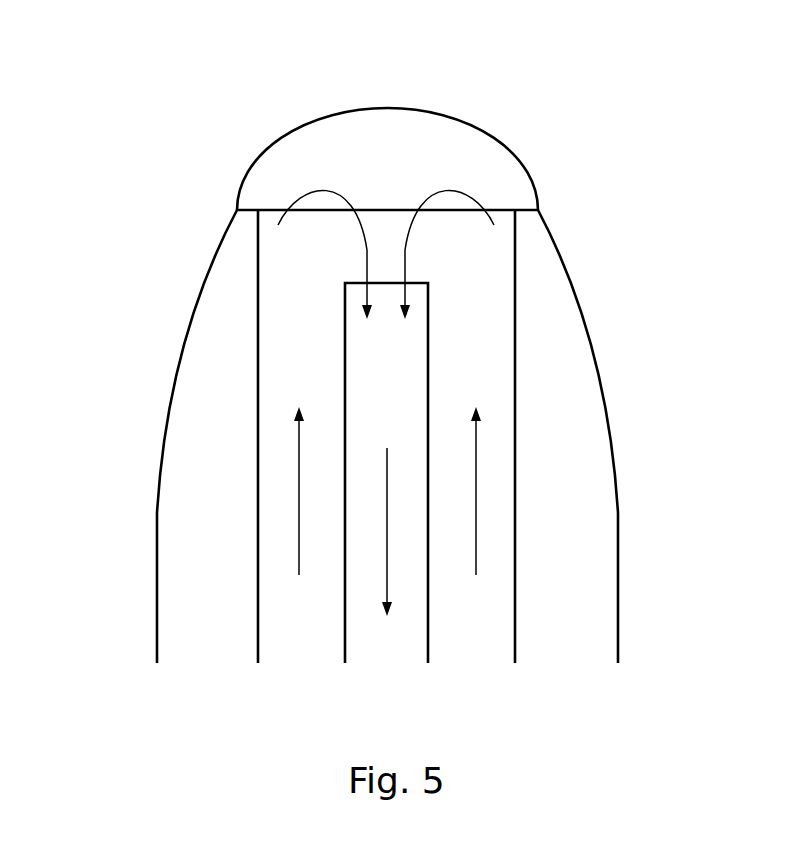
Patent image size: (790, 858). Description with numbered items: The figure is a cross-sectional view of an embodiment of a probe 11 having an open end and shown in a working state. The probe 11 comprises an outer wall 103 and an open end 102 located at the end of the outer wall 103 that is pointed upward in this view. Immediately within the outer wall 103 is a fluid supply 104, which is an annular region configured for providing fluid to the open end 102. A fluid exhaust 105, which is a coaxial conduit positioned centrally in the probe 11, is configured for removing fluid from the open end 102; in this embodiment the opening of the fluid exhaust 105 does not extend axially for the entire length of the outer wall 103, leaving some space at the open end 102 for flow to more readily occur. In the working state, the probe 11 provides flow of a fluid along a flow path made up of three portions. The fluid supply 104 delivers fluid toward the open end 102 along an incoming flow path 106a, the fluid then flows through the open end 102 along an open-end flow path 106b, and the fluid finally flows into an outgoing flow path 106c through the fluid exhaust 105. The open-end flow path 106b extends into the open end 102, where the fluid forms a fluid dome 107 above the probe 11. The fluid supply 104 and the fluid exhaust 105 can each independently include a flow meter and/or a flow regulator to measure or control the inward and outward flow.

The probe 11 is at (326, 424).
The open end 102 is at (503, 208).
The outer wall 103 is at (178, 494).
The fluid supply 104 is at (468, 278).
The fluid exhaust 105 is at (407, 356).
The incoming flow path 106a is at (476, 482).
The open-end flow path 106b is at (433, 190).
The outgoing flow path 106c is at (387, 552).
The fluid dome 107 is at (275, 142).